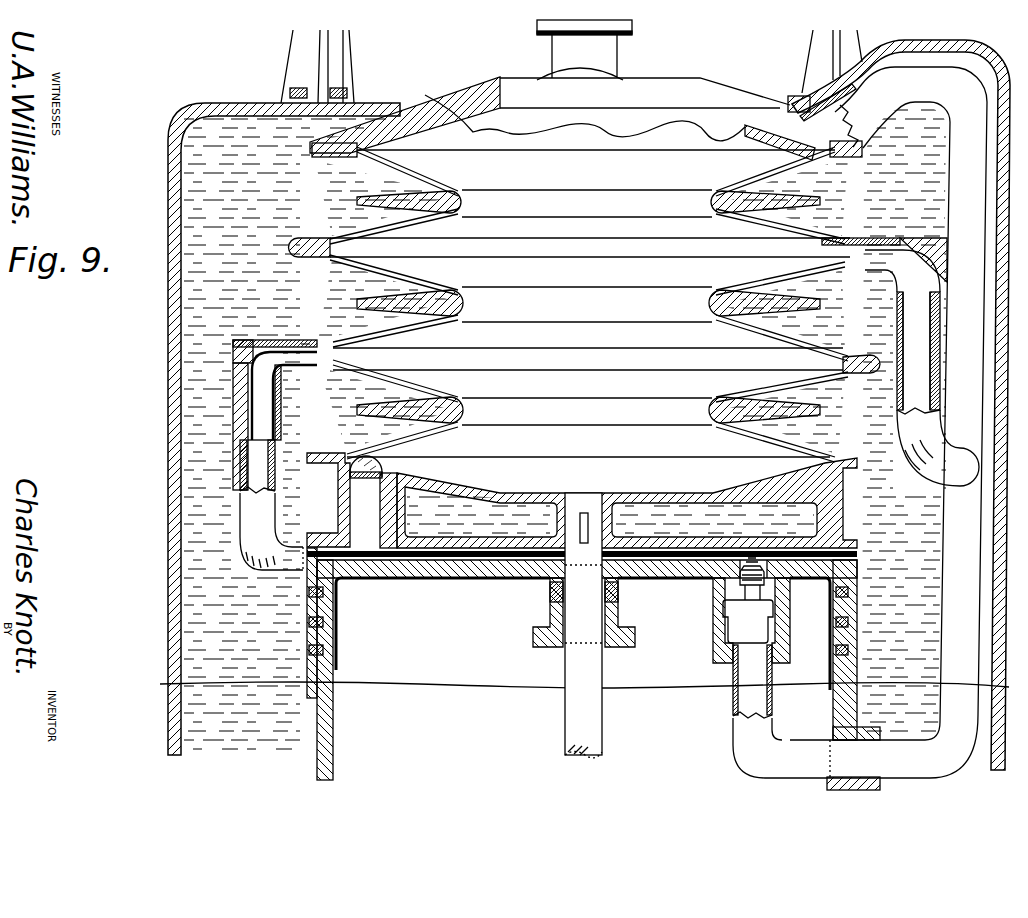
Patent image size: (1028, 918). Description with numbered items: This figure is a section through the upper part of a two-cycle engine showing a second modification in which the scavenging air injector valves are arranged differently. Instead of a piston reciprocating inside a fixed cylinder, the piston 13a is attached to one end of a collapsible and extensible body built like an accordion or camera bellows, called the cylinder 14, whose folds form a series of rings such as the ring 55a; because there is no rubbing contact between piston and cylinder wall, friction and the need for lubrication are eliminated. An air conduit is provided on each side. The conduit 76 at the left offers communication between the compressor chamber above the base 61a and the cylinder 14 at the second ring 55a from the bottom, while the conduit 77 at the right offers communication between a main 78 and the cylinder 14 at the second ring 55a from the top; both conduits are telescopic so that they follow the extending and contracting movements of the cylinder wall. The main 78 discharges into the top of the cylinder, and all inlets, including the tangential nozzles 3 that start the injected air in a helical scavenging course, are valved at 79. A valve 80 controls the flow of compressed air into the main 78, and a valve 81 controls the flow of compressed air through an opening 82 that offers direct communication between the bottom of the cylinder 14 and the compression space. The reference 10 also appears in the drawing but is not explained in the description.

The tangential nozzles 3 is at (312, 340).
The flow direction arrow 10 is at (200, 350).
The piston 13a is at (540, 473).
The cylinder 14 is at (593, 344).
The ring 55a is at (486, 340).
The base 61a is at (467, 582).
The conduit 76 is at (233, 413).
The conduit 77 is at (898, 384).
The main 78 is at (952, 545).
The valve 79 is at (798, 97).
The valve 80 is at (735, 607).
The valve 81 is at (370, 456).
The opening 82 is at (360, 499).